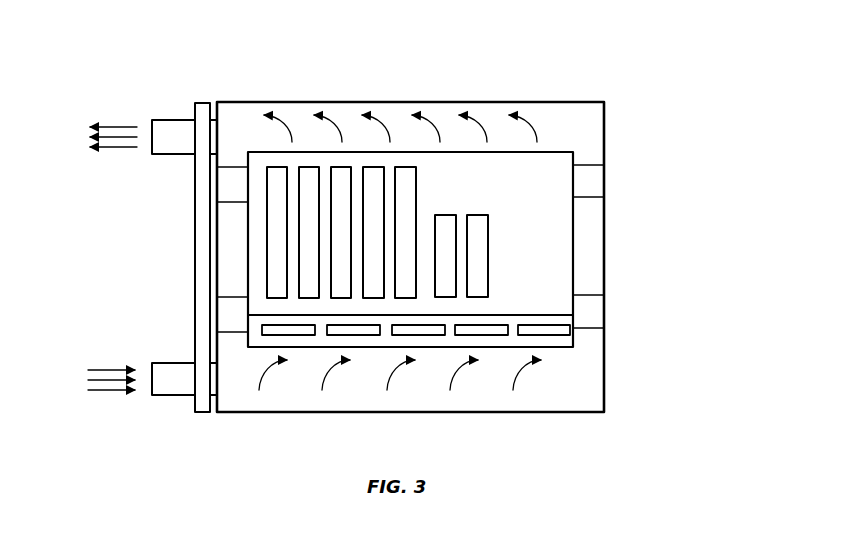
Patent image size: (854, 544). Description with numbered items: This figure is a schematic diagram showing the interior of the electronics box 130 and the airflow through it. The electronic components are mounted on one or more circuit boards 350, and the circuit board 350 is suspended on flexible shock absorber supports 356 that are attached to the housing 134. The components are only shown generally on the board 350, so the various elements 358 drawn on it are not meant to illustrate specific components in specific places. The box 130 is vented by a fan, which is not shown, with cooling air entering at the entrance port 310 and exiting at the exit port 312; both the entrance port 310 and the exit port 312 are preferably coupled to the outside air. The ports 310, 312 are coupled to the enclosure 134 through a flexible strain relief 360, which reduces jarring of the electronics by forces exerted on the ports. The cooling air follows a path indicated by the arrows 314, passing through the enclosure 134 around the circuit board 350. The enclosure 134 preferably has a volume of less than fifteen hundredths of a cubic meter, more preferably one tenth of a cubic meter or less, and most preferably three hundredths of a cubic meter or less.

The electronics box 130 is at (596, 100).
The housing 134 is at (383, 102).
The arrows 314 is at (546, 121).
The circuit board 350 is at (562, 162).
The elements 358 is at (417, 193).
The flexible shock absorber supports 356 is at (593, 322).
The flexible strain relief 360 is at (202, 250).
The exit port 312 is at (167, 125).
The entrance port 310 is at (173, 388).